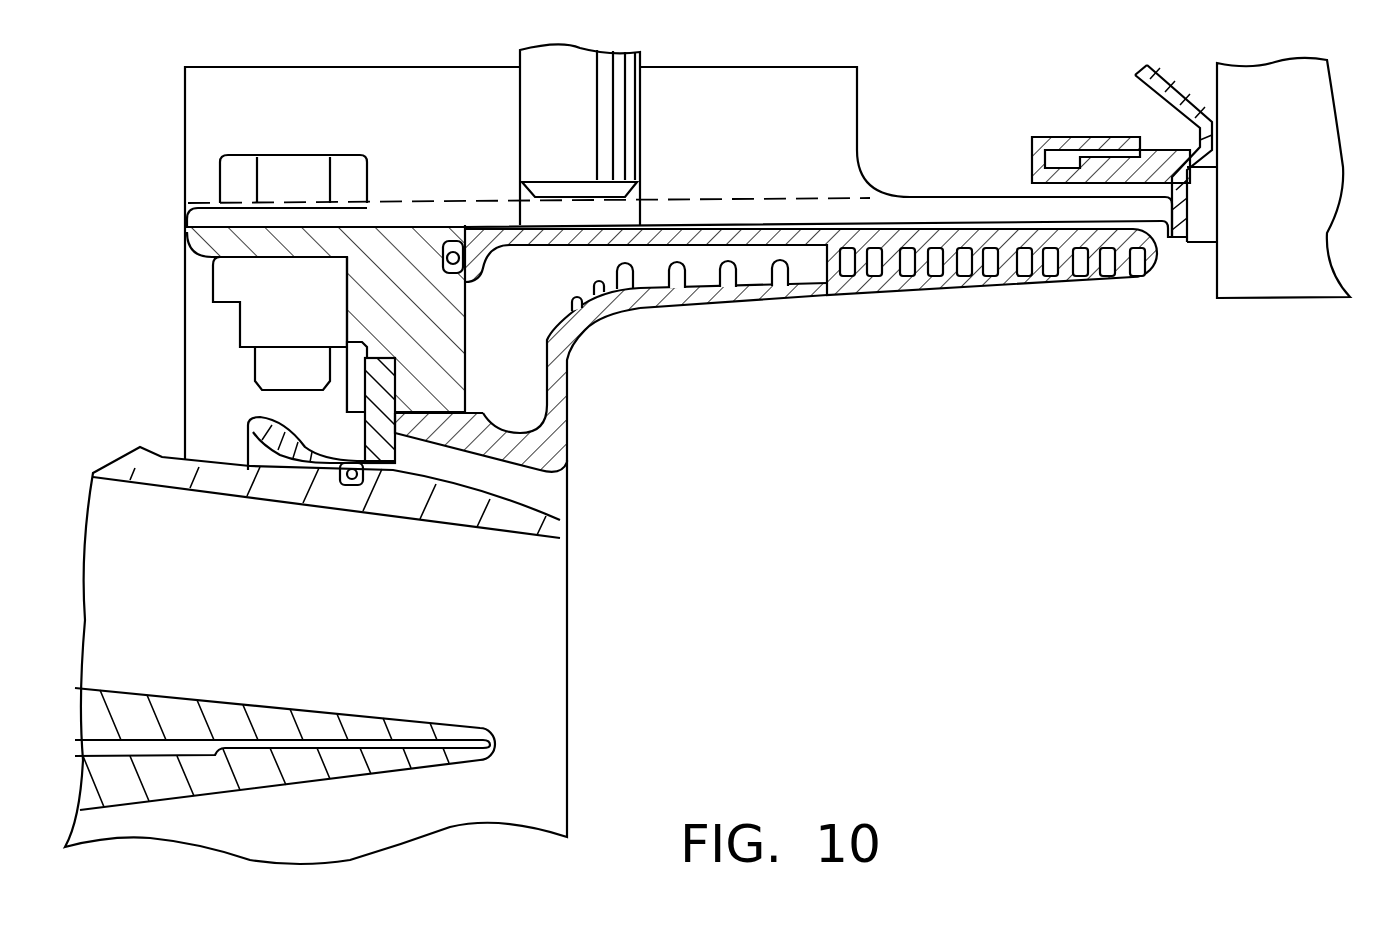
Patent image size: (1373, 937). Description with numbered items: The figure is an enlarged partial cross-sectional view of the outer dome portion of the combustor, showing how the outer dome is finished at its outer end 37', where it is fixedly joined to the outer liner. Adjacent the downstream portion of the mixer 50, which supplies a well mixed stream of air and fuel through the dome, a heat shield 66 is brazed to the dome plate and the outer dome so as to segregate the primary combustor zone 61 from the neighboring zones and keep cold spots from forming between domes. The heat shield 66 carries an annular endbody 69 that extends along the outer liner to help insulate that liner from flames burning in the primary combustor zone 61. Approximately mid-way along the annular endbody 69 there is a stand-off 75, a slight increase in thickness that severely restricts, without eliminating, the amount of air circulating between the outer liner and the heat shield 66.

The outer end 37' is at (363, 344).
The mixer 50 is at (588, 641).
The primary combustor zone 61 is at (792, 524).
The heat shield 66 is at (567, 403).
The annular endbody 69 is at (803, 300).
The stand-off 75 is at (1008, 227).